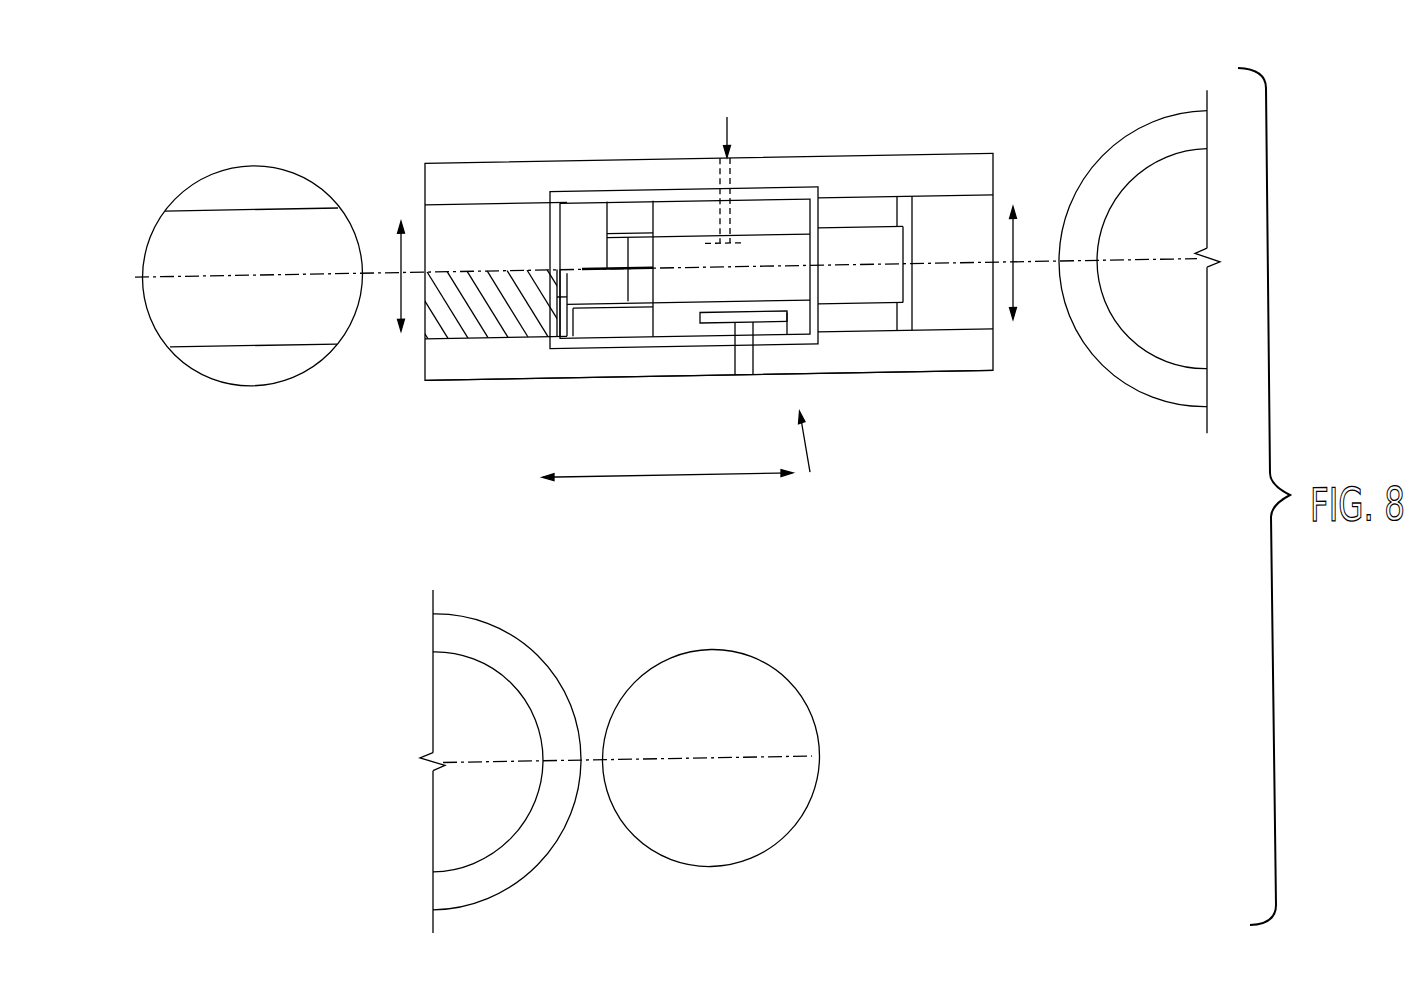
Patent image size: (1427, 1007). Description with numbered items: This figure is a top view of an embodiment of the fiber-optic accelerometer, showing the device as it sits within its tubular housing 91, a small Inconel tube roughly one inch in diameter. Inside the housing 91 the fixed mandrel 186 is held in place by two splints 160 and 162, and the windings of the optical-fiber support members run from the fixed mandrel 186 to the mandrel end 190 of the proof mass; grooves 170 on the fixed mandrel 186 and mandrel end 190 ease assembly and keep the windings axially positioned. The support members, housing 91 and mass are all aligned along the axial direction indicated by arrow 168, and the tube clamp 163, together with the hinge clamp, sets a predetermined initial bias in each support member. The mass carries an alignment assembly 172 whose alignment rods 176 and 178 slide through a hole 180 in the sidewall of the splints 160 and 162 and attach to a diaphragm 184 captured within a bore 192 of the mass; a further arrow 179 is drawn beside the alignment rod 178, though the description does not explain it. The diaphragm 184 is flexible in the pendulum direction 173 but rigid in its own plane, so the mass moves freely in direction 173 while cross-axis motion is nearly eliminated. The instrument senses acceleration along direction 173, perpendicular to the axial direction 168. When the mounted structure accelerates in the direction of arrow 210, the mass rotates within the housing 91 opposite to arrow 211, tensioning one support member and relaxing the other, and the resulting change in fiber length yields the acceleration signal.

The housing 91 is at (820, 509).
The splint 160 is at (569, 252).
The splint 162 is at (709, 406).
The tube clamp 163 is at (592, 236).
The axial direction arrow 168 is at (667, 456).
The grooves 170 is at (506, 342).
The alignment assembly 172 is at (835, 450).
The pendulum direction 173 is at (1034, 285).
The alignment rod 176 is at (733, 379).
The alignment rod 178 is at (685, 176).
The flow direction 179 is at (727, 118).
The hole 180 is at (719, 306).
The diaphragm 184 is at (697, 374).
The fixed mandrel 186 is at (867, 214).
The mandrel end 190 is at (587, 371).
The bore 192 is at (590, 229).
The acceleration direction arrow 210 is at (378, 259).
The mass rotation arrow 211 is at (798, 257).